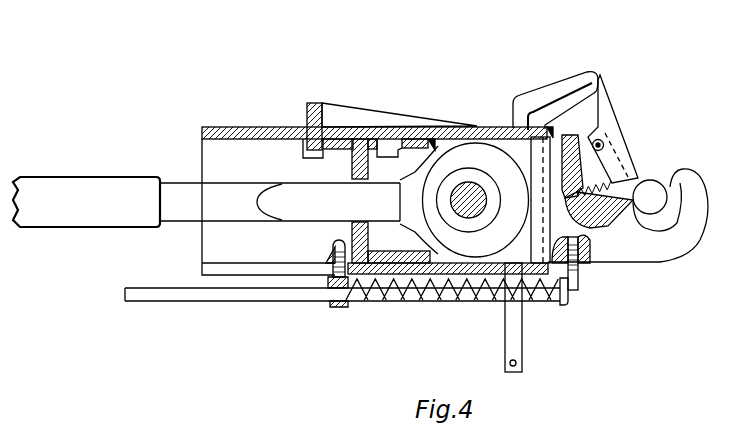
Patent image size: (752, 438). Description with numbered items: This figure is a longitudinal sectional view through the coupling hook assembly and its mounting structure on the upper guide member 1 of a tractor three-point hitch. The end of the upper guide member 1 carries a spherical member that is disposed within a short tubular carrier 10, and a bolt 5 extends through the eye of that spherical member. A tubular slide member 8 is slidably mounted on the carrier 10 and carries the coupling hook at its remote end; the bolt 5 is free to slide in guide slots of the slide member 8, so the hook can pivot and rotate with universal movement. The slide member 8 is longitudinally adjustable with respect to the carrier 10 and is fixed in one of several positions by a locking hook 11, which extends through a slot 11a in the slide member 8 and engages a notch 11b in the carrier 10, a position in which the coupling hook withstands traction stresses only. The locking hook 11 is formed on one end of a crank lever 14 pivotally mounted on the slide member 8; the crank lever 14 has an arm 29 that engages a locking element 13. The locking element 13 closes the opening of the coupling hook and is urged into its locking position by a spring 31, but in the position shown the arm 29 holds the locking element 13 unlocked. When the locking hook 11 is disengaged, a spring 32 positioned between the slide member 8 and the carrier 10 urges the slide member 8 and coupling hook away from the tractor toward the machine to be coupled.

The upper guide member 1 is at (81, 188).
The tubular slide member 8 is at (245, 127).
The locking hook 11 is at (315, 103).
The slot 11a is at (293, 143).
The notch 11b is at (383, 148).
The tubular carrier 10 is at (365, 127).
The bolt 5 is at (467, 190).
The arm 29 is at (572, 83).
The locking element 13 is at (613, 123).
The spring 31 is at (603, 222).
The crank lever 14 is at (520, 342).
The spring 32 is at (397, 300).